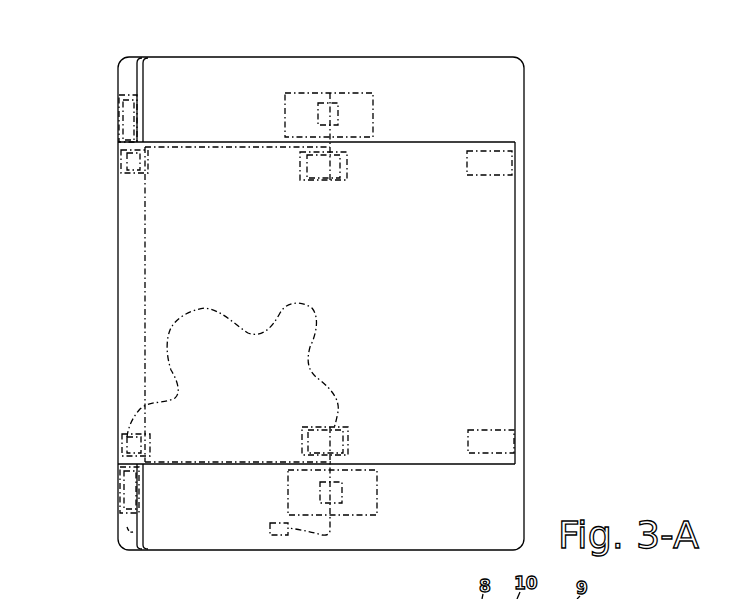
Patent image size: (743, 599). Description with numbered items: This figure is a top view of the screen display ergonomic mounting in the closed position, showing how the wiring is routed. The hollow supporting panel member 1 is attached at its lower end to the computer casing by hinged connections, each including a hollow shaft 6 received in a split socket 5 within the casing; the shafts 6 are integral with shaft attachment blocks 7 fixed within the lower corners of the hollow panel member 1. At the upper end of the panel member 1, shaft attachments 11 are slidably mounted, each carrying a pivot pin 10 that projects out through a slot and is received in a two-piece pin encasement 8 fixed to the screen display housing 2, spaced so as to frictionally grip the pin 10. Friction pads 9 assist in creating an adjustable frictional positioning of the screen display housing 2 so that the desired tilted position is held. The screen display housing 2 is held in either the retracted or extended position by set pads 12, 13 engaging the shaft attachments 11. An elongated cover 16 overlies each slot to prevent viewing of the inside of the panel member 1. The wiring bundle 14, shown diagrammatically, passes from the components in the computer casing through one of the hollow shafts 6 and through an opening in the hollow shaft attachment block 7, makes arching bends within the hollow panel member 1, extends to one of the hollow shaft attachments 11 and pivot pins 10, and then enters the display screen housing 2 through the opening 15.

The panel member 1 is at (523, 268).
The screen display housing 2 is at (526, 485).
The split socket 5 is at (120, 128).
The hollow shaft 6 is at (130, 176).
The shaft attachment block 7 is at (134, 166).
The pin encasement 8 is at (285, 93).
The friction pad 9 is at (320, 108).
The pivot pin 10 is at (328, 93).
The shaft attachment 11 is at (304, 163).
The set pad 12 is at (348, 165).
The set pad 13 is at (498, 162).
The wiring bundle 14 is at (86, 303).
The opening into display screen 15 is at (130, 534).
The elongated cover 16 is at (196, 150).